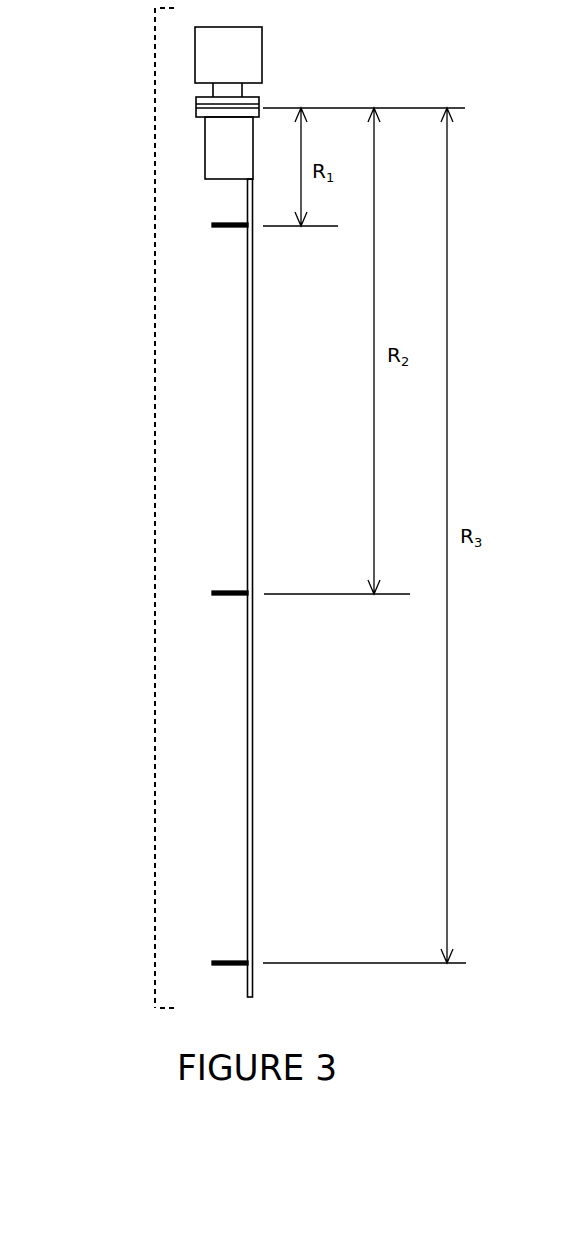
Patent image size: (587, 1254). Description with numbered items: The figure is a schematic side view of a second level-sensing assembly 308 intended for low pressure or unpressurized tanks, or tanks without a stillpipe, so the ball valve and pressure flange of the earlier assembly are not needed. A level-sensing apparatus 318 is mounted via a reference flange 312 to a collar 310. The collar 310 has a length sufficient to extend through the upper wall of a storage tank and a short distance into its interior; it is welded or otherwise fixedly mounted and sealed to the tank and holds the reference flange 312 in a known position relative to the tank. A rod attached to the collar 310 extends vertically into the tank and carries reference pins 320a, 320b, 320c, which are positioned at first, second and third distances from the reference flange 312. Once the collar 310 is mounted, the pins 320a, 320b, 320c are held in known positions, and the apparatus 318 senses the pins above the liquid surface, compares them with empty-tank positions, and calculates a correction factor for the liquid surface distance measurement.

The second level-sensing assembly 308 is at (155, 510).
The collar 310 is at (205, 162).
The reference flange 312 is at (197, 108).
The level-sensing apparatus 318 is at (195, 53).
The reference pin 320a is at (227, 225).
The reference pin 320b is at (230, 593).
The reference pin 320c is at (230, 962).